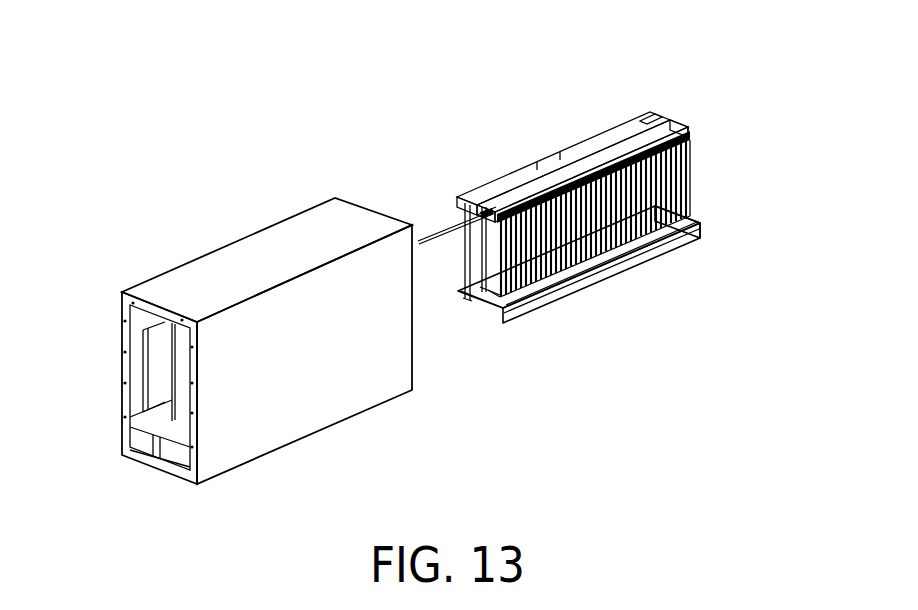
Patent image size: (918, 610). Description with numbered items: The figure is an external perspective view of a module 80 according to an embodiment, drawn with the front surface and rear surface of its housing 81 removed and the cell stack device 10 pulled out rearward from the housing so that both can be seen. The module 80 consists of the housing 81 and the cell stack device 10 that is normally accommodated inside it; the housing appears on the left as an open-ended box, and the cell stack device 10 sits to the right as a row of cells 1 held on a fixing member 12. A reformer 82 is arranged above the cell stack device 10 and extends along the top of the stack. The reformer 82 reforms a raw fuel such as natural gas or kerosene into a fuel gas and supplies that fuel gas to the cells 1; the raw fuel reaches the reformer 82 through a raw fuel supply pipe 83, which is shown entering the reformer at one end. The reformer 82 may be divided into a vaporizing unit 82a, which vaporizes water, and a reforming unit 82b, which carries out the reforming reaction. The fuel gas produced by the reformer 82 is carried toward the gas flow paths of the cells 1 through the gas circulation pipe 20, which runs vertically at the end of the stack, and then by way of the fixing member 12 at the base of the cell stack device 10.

The module 80 is at (248, 80).
The housing 81 is at (276, 249).
The cell stack device 10 is at (712, 148).
The cell 1 is at (688, 191).
The fixing member 12 is at (630, 280).
The gas circulation pipe 20 is at (462, 253).
The reformer 82 is at (561, 66).
The vaporizing unit 82a is at (537, 162).
The reforming unit 82b is at (592, 163).
The raw fuel supply pipe 83 is at (443, 226).